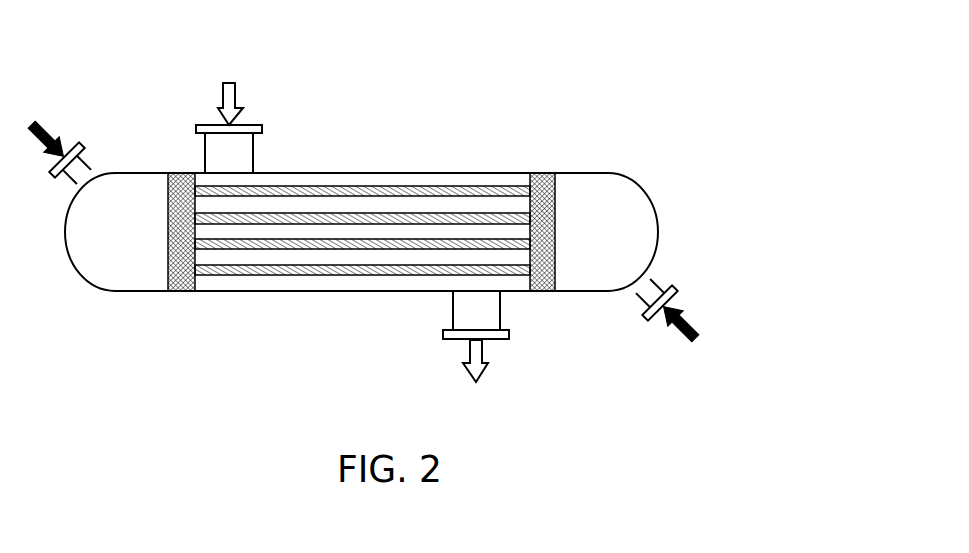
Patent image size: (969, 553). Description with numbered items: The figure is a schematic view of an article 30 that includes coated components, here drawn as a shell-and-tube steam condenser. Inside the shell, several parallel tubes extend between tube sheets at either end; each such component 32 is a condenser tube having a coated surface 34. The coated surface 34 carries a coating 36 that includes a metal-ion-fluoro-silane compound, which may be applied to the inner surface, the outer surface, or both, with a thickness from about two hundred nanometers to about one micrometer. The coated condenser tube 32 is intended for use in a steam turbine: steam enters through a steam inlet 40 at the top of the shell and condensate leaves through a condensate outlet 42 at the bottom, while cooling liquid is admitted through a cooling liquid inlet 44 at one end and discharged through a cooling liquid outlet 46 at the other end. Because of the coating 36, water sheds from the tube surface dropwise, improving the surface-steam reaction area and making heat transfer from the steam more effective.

The article 30 is at (624, 58).
The component 32 is at (355, 243).
The coated surface 34 is at (445, 187).
The coating 36 is at (257, 240).
The steam inlet 40 is at (237, 92).
The condensate outlet 42 is at (490, 368).
The cooling liquid inlet 44 is at (48, 130).
The cooling liquid outlet 46 is at (695, 320).